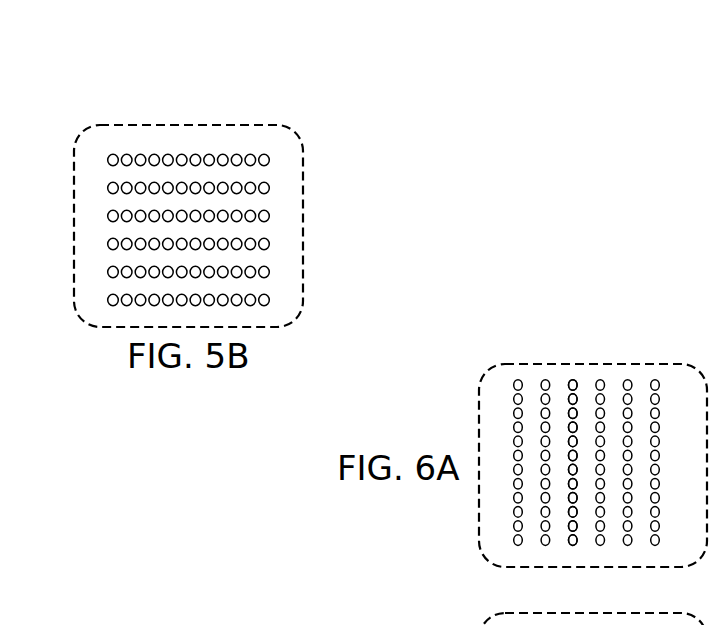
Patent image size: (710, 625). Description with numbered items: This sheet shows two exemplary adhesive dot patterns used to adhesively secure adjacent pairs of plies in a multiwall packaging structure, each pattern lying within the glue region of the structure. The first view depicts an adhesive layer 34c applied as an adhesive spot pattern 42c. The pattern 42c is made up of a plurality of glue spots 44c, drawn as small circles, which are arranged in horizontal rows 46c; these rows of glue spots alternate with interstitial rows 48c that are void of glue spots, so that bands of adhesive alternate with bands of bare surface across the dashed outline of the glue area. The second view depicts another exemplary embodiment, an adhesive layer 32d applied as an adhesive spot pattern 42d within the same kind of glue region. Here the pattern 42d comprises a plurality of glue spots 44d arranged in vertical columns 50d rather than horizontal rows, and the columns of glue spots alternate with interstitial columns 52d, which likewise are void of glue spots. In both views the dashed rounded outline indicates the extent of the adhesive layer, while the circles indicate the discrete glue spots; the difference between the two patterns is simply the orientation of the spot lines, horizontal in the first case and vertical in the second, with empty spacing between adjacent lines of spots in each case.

In FIG. 5B, the adhesive layer 34c is at (288, 191).
In FIG. 5B, the adhesive spot pattern 42c is at (294, 237).
In FIG. 5B, the glue spots 44c is at (223, 154).
In FIG. 5B, the horizontal rows 46c is at (108, 273).
In FIG. 5B, the interstitial rows 48c is at (268, 260).
In FIG. 6A, the adhesive layer 32d is at (494, 428).
In FIG. 6A, the adhesive spot pattern 42d is at (488, 512).
In FIG. 6A, the glue spots 44d is at (627, 378).
In FIG. 6A, the vertical columns 50d is at (518, 380).
In FIG. 6A, the interstitial columns 52d is at (559, 387).